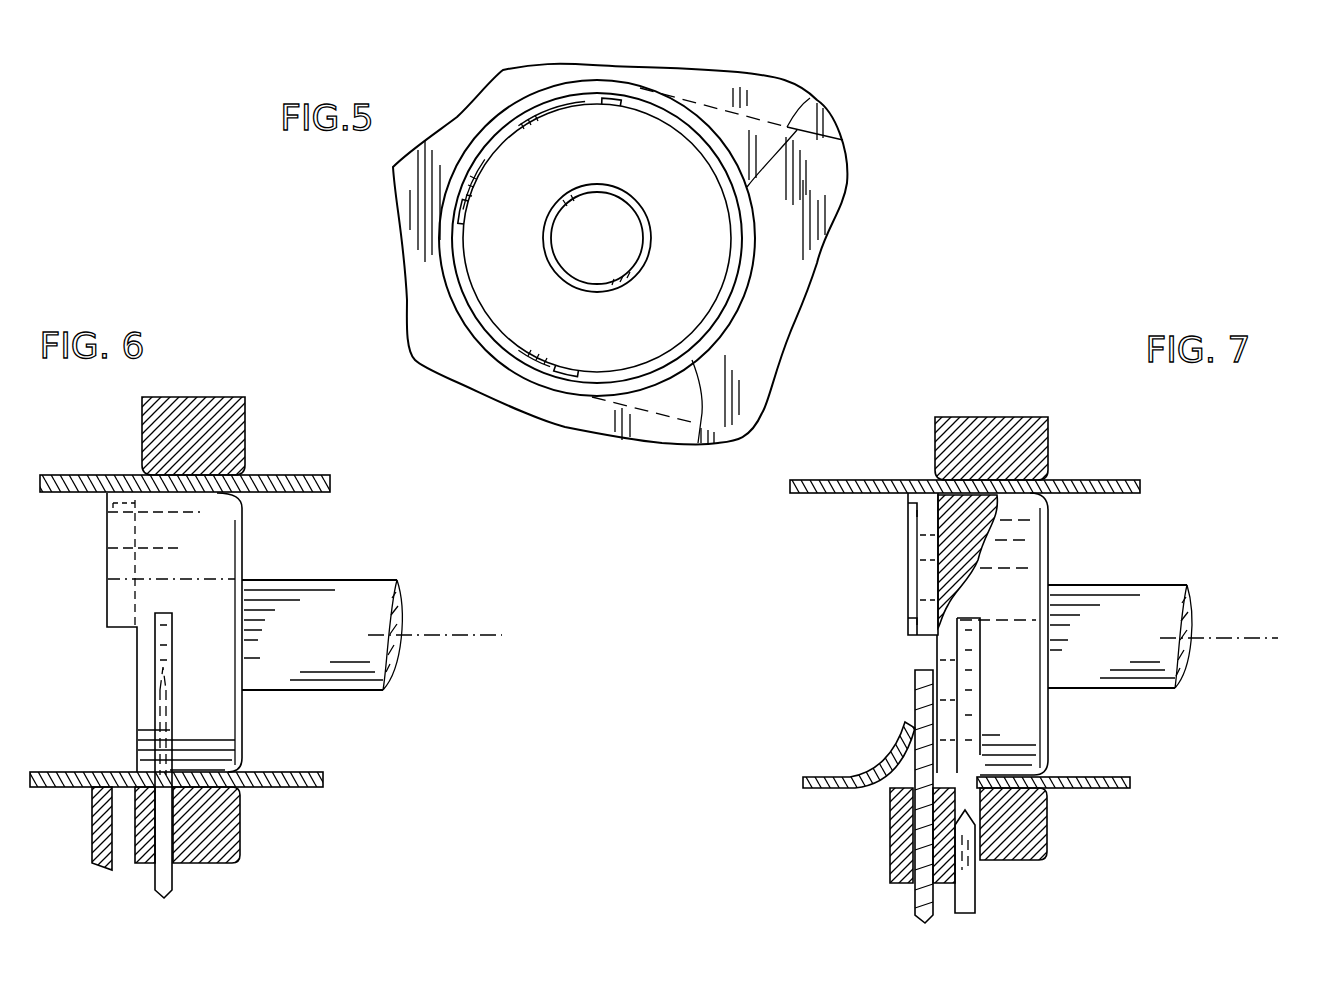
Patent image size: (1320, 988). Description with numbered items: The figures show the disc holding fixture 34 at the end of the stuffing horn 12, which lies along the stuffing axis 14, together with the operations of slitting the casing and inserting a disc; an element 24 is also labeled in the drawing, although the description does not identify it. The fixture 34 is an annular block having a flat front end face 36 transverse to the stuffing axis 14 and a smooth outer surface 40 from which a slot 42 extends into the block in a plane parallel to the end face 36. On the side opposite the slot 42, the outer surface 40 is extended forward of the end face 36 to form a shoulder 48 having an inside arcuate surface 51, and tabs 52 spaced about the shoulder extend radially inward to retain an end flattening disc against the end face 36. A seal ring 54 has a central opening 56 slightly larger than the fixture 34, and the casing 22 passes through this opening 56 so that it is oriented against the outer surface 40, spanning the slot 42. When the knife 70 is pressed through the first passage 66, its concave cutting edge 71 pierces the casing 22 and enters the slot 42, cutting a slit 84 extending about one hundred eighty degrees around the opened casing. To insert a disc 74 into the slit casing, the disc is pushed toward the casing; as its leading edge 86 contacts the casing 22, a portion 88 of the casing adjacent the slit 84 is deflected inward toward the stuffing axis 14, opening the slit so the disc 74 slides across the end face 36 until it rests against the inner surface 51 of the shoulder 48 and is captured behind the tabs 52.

In FIG. 5, the stuffing horn 12 is at (651, 222).
In FIG. 6, the stuffing horn 12 is at (358, 580).
In FIG. 7, the stuffing horn 12 is at (1143, 585).
In FIG. 6, the stuffing axis 14 is at (449, 635).
In FIG. 7, the stuffing axis 14 is at (1240, 638).
In FIG. 6, the casing 22 is at (278, 478).
In FIG. 7, the casing 22 is at (1100, 488).
In FIG. 6, the tube end portion 24 is at (252, 652).
In FIG. 7, the tube end portion 24 is at (1053, 655).
In FIG. 6, the disc holding fixture 34 is at (253, 536).
In FIG. 7, the disc holding fixture 34 is at (1062, 550).
In FIG. 5, the front end face 36 is at (653, 306).
In FIG. 7, the front end face 36 is at (935, 596).
In FIG. 5, the outer surface 40 is at (740, 240).
In FIG. 6, the outer surface 40 is at (222, 732).
In FIG. 7, the outer surface 40 is at (1040, 757).
In FIG. 6, the slot 42 is at (158, 641).
In FIG. 5, the shoulder 48 is at (487, 142).
In FIG. 7, the shoulder 48 is at (912, 553).
In FIG. 7, the inside arcuate surface 51 is at (925, 556).
In FIG. 5, the tabs 52 is at (614, 110).
In FIG. 7, the tabs 52 is at (912, 525).
In FIG. 5, the seal ring 54 is at (768, 90).
In FIG. 6, the seal ring 54 is at (245, 402).
In FIG. 7, the seal ring 54 is at (1048, 428).
In FIG. 5, the central opening 56 is at (750, 280).
In FIG. 6, the first passage 66 is at (173, 823).
In FIG. 6, the knife member 70 is at (173, 877).
In FIG. 7, the knife member 70 is at (975, 877).
In FIG. 6, the cutting edge 71 is at (158, 667).
In FIG. 7, the disc 74 is at (928, 848).
In FIG. 6, the slit 84 is at (137, 740).
In FIG. 7, the leading edge 86 is at (918, 668).
In FIG. 7, the portion of the casing 88 is at (892, 750).